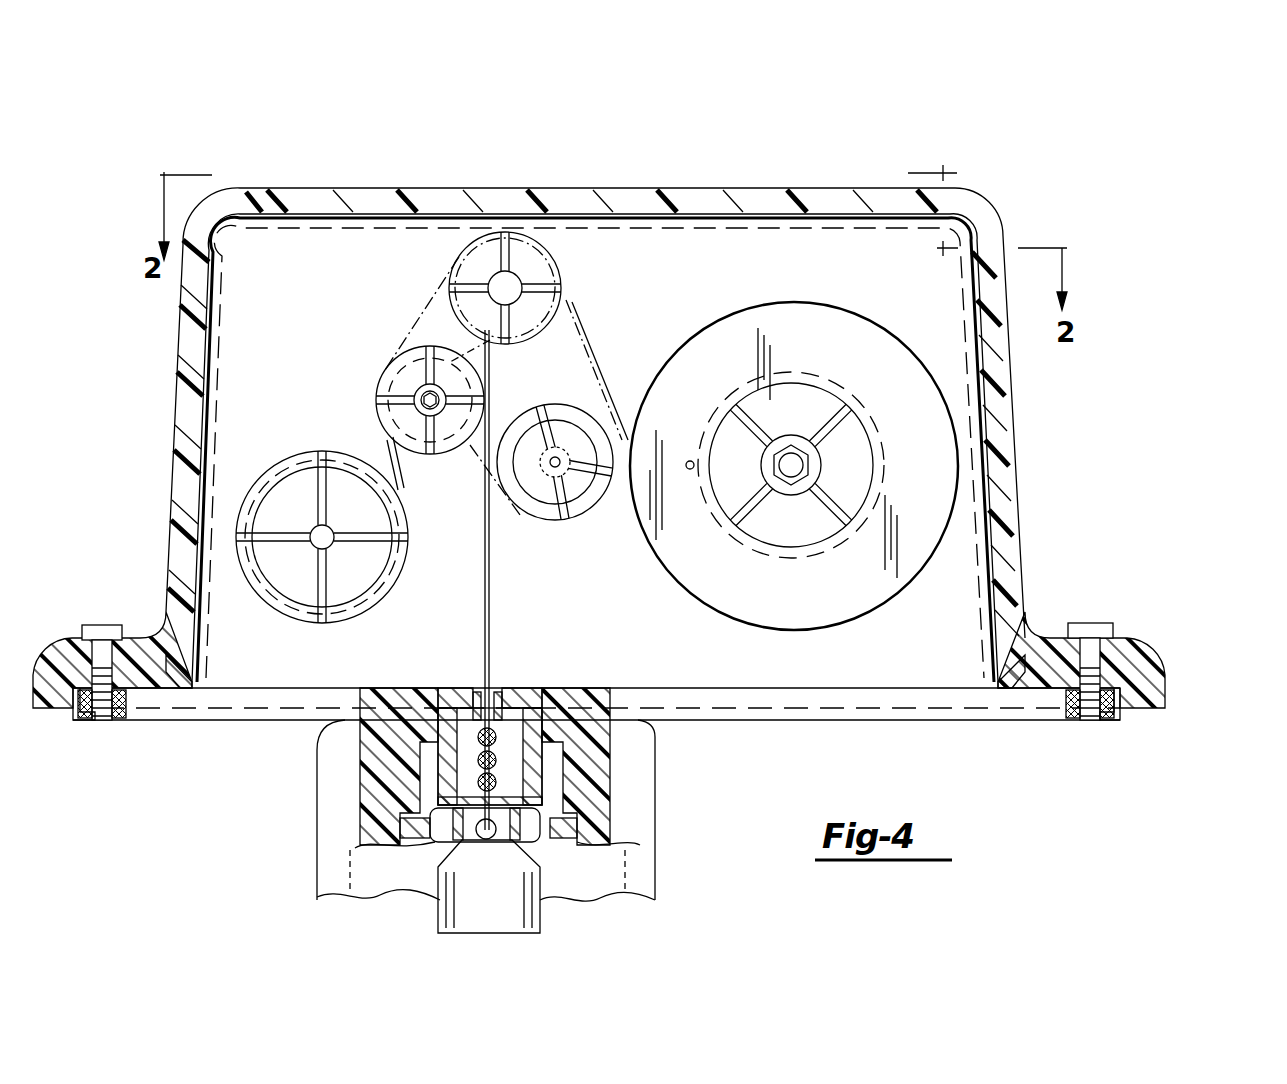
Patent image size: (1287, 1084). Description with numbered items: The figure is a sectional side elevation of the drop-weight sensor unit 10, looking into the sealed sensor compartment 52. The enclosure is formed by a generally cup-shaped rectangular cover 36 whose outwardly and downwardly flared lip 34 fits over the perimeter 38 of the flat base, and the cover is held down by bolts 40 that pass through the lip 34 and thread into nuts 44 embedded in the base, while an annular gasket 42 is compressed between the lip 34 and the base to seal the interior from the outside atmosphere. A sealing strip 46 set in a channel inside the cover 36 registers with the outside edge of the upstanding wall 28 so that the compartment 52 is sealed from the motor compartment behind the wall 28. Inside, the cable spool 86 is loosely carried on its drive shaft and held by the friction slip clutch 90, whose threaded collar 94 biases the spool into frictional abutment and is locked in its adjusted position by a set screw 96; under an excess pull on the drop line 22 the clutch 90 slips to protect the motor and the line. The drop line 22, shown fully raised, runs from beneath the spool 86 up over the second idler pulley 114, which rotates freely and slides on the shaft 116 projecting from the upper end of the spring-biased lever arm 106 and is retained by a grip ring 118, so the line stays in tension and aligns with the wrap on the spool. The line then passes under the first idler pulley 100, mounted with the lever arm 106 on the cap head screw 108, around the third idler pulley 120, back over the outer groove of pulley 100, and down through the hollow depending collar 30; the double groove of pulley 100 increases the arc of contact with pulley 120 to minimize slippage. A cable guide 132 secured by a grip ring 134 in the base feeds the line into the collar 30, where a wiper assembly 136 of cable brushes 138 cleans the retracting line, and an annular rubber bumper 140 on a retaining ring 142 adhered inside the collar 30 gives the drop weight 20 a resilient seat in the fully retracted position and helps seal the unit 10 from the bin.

The sensor unit 10 is at (1050, 487).
The drop weight 20 is at (542, 922).
The drop line 22 is at (593, 342).
The wall 28 is at (820, 285).
The collar 30 is at (648, 768).
The lip 34 is at (45, 655).
The cover 36 is at (995, 205).
The perimeter 38 is at (76, 720).
The bolts 40 is at (108, 632).
The gasket 42 is at (185, 690).
The nuts 44 is at (118, 722).
The sealing strip 46 is at (818, 212).
The compartment 52 is at (692, 240).
The cable spool 86 is at (794, 452).
The friction slip clutch 90 is at (788, 430).
The collar 94 is at (812, 468).
The set screw 96 is at (793, 478).
The first idler pulley 100 is at (393, 375).
The lever arm 106 is at (505, 383).
The cap head screw 108 is at (414, 398).
The second idler pulley 114 is at (562, 265).
The shaft 116 is at (569, 494).
The grip ring 118 is at (545, 475).
The third idler pulley 120 is at (300, 450).
The cable guide 132 is at (480, 690).
The grip ring 134 is at (505, 690).
The wiper assembly 136 is at (430, 688).
The cable brushes 138 is at (500, 757).
The rubber bumper 140 is at (436, 842).
The retaining ring 142 is at (498, 832).